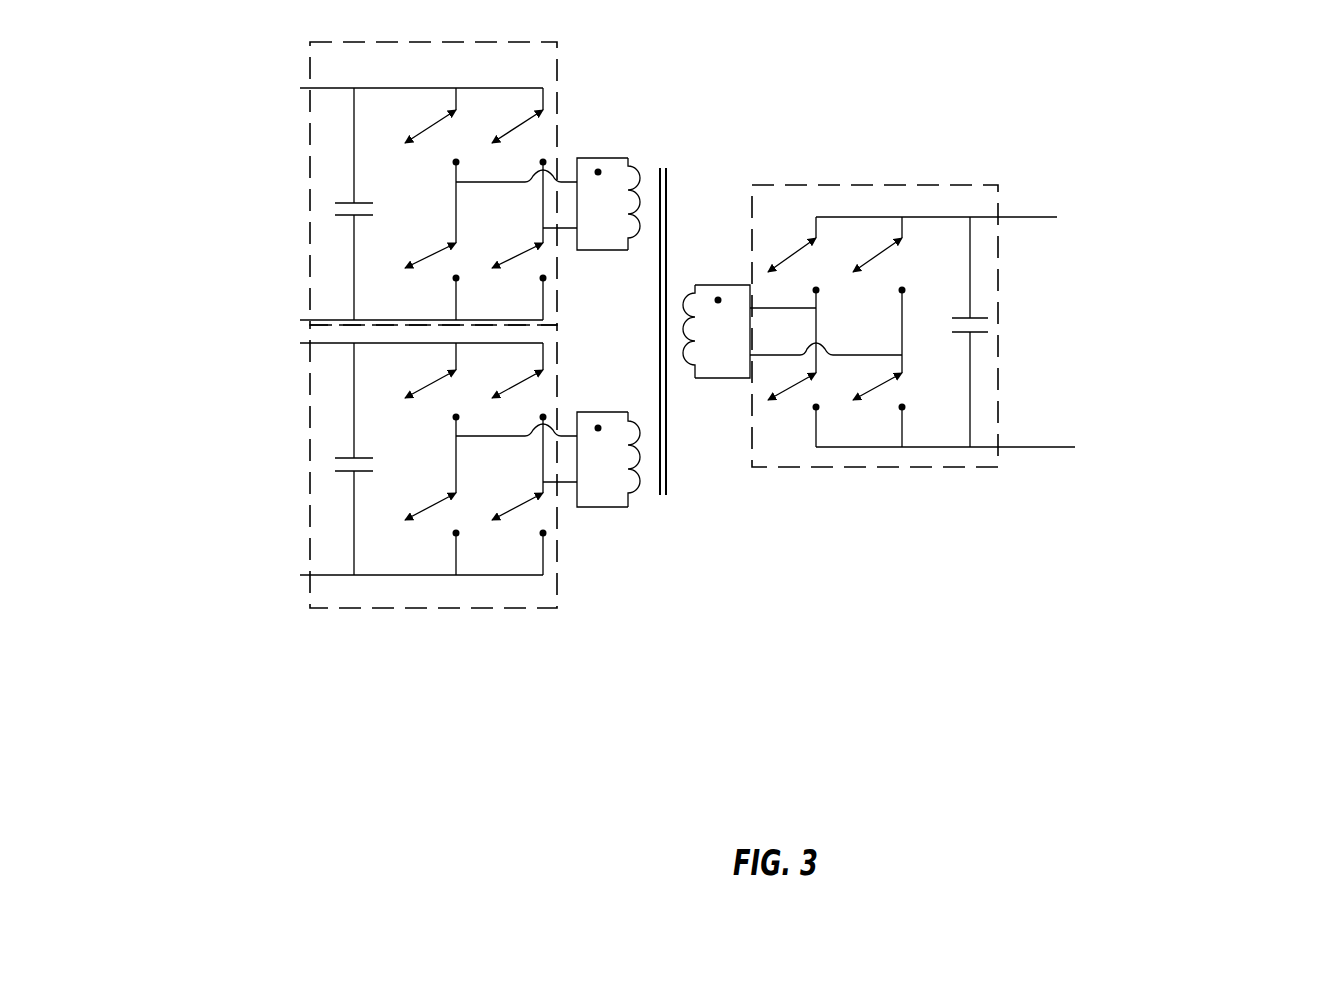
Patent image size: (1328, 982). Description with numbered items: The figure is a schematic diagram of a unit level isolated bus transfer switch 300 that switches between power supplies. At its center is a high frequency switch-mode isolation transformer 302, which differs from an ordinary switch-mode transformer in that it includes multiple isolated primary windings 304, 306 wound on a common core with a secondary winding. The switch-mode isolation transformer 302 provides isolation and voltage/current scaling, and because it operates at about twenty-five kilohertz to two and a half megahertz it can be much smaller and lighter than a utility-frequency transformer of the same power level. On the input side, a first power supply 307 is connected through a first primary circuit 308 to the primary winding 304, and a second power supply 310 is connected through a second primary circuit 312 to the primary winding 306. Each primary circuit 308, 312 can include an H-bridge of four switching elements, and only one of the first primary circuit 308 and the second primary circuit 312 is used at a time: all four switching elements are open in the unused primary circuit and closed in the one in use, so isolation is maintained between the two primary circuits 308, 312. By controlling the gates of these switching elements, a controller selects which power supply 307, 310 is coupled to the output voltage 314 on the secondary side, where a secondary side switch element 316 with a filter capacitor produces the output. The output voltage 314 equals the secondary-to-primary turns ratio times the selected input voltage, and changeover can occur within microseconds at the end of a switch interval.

The unit level isolated bus transfer switch 300 is at (1245, 90).
The high frequency switch-mode isolation transformer 302 is at (665, 112).
The primary winding 304 is at (603, 158).
The primary winding 306 is at (618, 508).
The first power supply 307 is at (190, 200).
The first primary circuit 308 is at (483, 42).
The second power supply 310 is at (190, 460).
The second primary circuit 312 is at (427, 618).
The Vout(t) 314 is at (1202, 337).
The secondary side switch element 316 is at (870, 470).